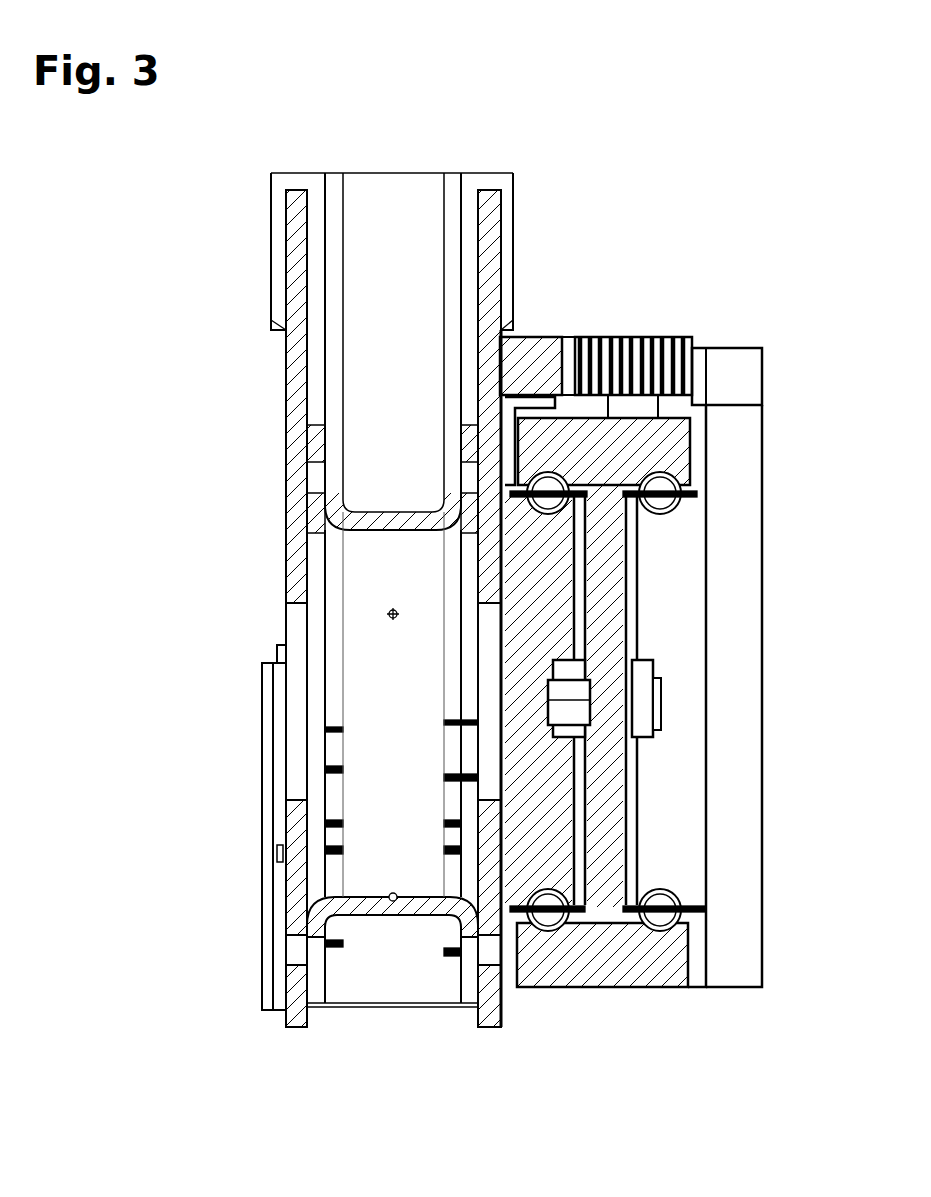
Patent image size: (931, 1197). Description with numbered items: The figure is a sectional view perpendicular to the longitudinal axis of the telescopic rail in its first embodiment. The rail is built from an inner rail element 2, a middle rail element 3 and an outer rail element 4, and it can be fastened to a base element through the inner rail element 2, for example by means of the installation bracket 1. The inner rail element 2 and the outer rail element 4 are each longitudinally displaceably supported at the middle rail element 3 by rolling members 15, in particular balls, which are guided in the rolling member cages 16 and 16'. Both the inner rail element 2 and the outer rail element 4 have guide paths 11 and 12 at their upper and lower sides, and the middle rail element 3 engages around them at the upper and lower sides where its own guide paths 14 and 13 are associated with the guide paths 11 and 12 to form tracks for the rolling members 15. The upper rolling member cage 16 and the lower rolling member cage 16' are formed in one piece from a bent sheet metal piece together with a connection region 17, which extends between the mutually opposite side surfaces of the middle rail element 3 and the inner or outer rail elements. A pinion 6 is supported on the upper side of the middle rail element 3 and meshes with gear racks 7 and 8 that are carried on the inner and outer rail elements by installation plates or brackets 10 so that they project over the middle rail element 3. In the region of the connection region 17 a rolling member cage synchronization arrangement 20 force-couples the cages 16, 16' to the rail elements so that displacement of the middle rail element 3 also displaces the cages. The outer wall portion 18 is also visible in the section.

The installation bracket 1 is at (357, 570).
The inner rail element 2 is at (522, 632).
The middle rail element 3 is at (599, 492).
The outer rail element 4 is at (690, 772).
The pinion 6 is at (669, 340).
The gear rack 7 is at (537, 358).
The gear rack 8 is at (747, 371).
The installation plate or bracket 10 is at (512, 420).
The guide path 11 is at (665, 512).
The guide path 12 is at (658, 885).
The guide path 13 is at (655, 940).
The guide path 14 is at (677, 470).
The rolling member 15 is at (670, 920).
The rolling member cage 16 is at (663, 521).
The rolling member cage 16' is at (670, 876).
The connection region 17 is at (628, 643).
The outer wall 18 is at (750, 653).
The rolling member cage synchronization arrangement 20 is at (595, 695).